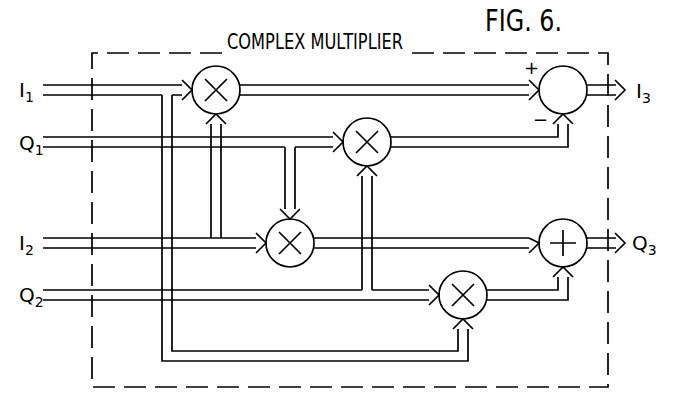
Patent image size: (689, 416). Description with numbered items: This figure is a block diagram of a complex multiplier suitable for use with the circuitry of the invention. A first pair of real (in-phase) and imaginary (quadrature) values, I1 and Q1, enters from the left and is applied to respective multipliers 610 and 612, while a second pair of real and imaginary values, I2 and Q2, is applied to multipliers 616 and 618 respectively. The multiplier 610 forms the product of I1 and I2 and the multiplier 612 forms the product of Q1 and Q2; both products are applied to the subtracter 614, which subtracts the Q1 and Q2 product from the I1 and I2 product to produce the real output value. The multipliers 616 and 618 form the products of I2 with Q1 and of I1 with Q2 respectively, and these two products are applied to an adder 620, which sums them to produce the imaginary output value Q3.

The multiplier 610 is at (236, 75).
The multiplier 612 is at (385, 127).
The subtracter 614 is at (539, 104).
The multiplier 616 is at (306, 221).
The multiplier 618 is at (480, 278).
The adder 620 is at (550, 221).